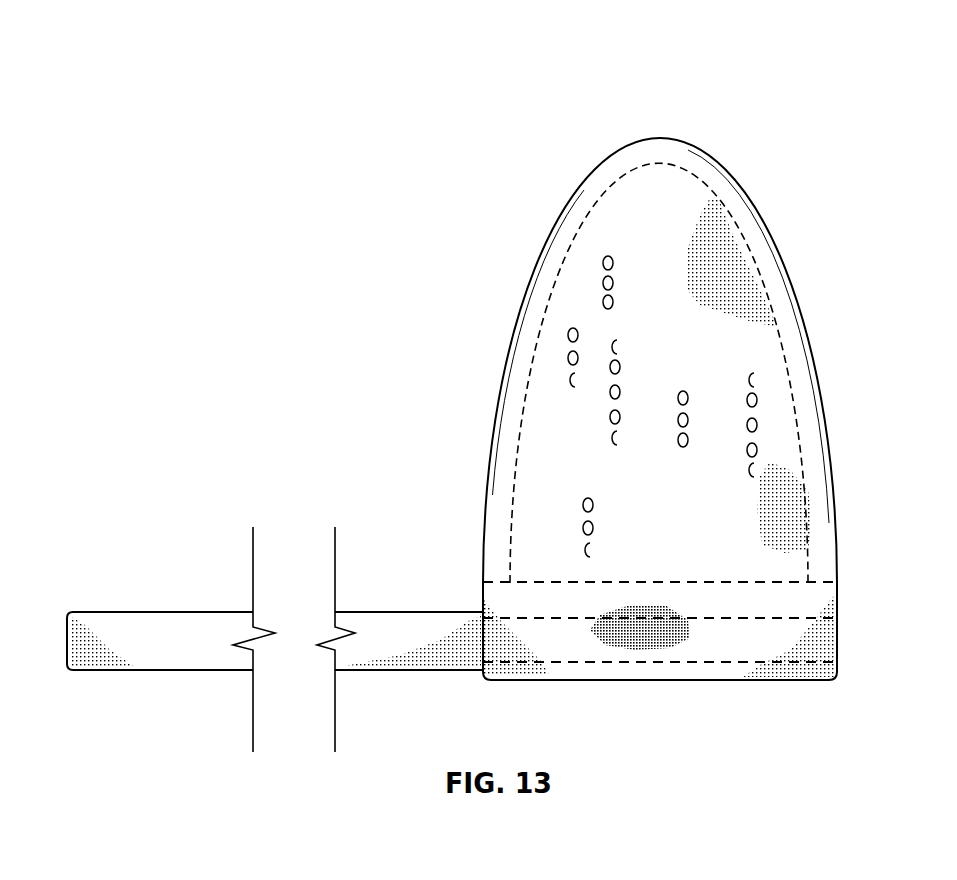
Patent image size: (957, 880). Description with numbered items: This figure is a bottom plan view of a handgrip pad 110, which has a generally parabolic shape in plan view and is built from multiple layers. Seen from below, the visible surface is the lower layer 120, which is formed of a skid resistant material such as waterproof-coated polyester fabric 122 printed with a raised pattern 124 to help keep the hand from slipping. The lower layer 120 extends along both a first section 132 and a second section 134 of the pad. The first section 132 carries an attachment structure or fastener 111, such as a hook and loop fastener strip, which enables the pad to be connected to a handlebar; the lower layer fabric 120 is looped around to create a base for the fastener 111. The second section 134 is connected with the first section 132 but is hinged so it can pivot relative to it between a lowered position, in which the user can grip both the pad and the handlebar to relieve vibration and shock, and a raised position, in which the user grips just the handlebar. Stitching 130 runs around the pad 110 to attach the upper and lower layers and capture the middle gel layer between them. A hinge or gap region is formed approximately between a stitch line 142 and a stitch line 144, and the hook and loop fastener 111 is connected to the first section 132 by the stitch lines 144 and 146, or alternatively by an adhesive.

The handgrip pad 110 is at (770, 140).
The attachment structure or fastener 111 is at (138, 610).
The lower layer 120 is at (763, 357).
The waterproof-coated polyester fabric 122 is at (758, 335).
The raised pattern 124 is at (755, 395).
The stitching 130 is at (567, 247).
The first section 132 is at (840, 640).
The second section 134 is at (512, 330).
The stitch line 142 is at (783, 582).
The stitch line 144 is at (788, 618).
The stitch line 146 is at (703, 660).